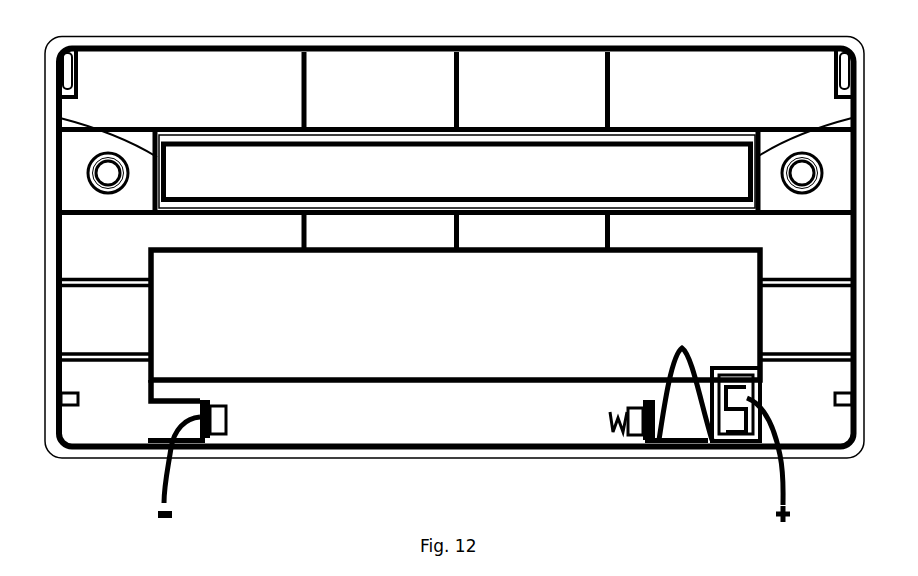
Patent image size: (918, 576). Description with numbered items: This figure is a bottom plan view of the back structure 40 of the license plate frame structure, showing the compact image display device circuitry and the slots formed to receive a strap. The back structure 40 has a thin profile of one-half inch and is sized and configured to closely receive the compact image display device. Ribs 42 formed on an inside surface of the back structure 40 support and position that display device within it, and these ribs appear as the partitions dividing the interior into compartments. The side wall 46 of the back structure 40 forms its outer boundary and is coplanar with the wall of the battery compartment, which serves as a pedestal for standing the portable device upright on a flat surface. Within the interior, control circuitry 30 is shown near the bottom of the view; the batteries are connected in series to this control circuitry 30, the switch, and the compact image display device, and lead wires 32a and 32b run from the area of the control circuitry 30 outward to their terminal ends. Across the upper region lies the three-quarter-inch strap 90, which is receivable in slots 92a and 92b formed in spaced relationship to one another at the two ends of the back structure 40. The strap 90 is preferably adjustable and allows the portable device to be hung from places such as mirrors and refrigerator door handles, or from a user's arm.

The control circuitry 30 is at (722, 441).
The negative lead wire 32a is at (165, 473).
The positive lead wire 32b is at (777, 473).
The back structure 40 is at (399, 42).
The ribs 42 is at (303, 94).
The side wall 46 is at (330, 461).
The strap 90 is at (460, 178).
The slot 92a is at (60, 118).
The slot 92b is at (856, 118).